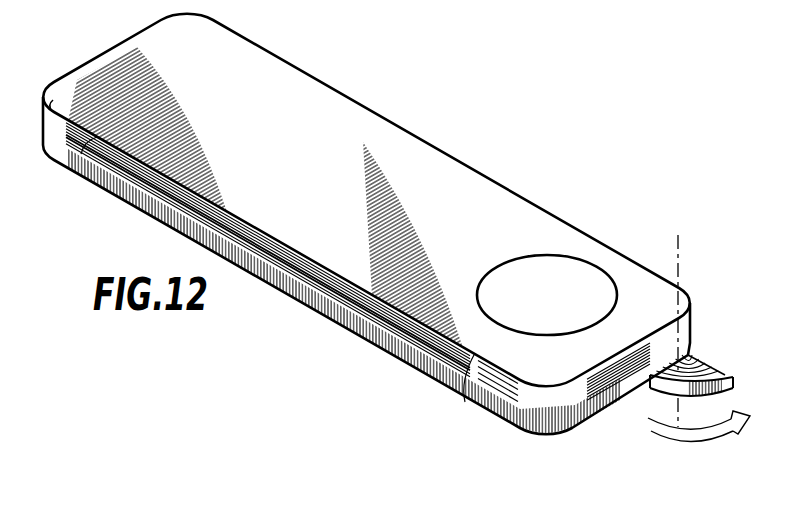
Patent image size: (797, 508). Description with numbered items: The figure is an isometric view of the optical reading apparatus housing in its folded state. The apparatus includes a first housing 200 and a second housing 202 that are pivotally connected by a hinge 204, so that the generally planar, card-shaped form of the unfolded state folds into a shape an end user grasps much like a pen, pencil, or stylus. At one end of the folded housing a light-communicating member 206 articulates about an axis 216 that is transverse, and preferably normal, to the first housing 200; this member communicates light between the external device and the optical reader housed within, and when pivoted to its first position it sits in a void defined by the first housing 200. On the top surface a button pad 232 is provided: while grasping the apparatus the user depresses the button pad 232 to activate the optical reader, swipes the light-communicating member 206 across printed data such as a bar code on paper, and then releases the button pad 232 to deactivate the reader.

The first housing 200 is at (363, 217).
The second housing 202 is at (103, 67).
The hinge 204 is at (300, 307).
The light-communicating member 206 is at (711, 363).
The axis 216 is at (679, 262).
The button pad 232 is at (573, 258).